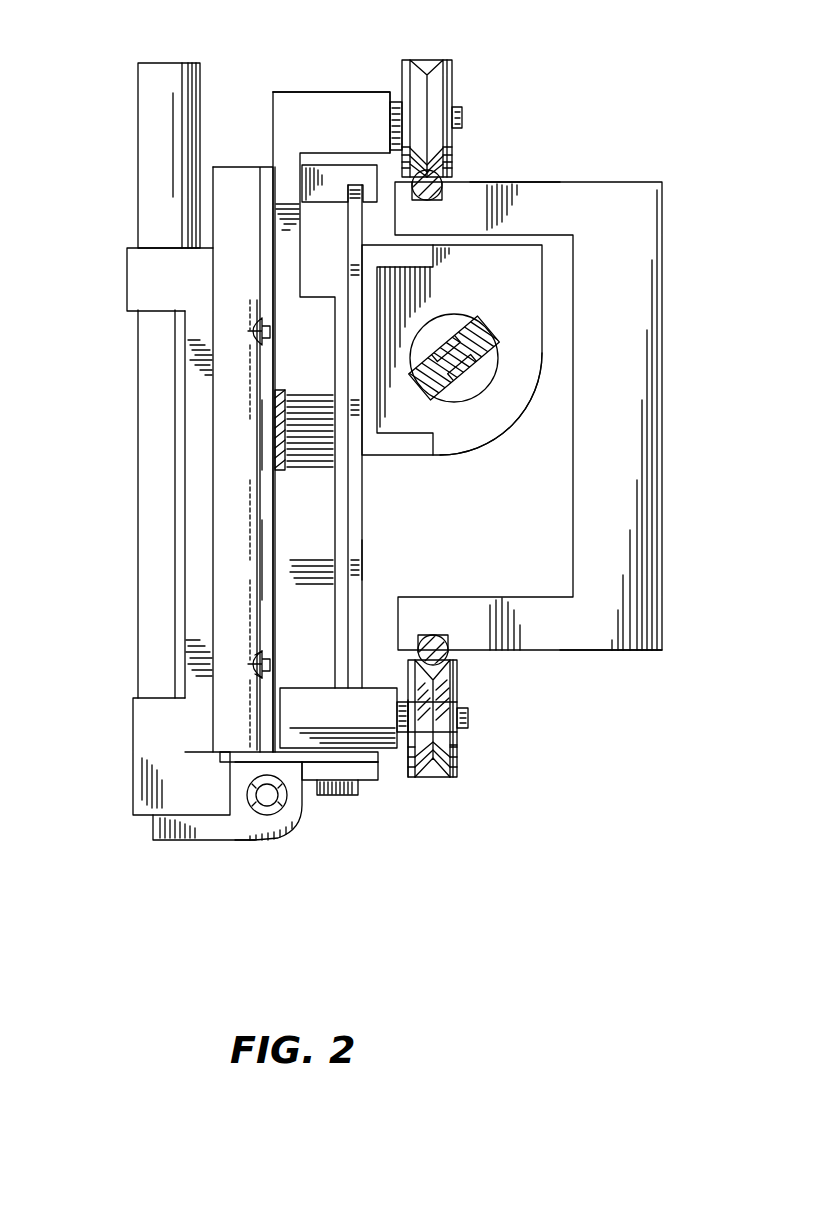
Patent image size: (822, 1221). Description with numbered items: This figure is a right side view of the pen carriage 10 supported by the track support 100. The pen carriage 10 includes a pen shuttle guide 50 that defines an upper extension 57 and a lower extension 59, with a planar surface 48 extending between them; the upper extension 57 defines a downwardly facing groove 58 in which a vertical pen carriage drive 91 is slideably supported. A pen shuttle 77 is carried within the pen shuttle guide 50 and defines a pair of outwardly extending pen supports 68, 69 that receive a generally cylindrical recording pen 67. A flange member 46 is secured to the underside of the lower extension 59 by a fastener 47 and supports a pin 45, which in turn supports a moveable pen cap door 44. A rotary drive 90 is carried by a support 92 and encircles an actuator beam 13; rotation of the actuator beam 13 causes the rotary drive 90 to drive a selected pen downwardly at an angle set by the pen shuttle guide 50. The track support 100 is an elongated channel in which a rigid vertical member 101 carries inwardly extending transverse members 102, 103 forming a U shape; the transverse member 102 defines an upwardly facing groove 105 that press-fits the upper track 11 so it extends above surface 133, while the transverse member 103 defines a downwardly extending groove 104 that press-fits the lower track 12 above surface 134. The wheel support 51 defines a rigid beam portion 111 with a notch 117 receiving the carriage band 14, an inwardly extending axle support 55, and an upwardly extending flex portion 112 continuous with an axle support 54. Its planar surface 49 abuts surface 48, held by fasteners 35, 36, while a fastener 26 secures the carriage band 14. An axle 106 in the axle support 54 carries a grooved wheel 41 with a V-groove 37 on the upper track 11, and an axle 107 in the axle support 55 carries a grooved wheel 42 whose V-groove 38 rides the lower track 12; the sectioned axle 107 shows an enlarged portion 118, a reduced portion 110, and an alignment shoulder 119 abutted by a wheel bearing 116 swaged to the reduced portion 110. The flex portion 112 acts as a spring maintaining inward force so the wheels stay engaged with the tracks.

The pen carriage 10 is at (130, 390).
The upper track 11 is at (445, 180).
The lower track 12 is at (436, 636).
The actuator beam 13 is at (478, 326).
The carriage band 14 is at (292, 527).
The fastener 26 is at (263, 458).
The fastener 35 is at (190, 680).
The fastener 36 is at (247, 328).
The V-groove 37 is at (438, 60).
The V-groove 38 is at (435, 778).
The grooved wheel 41 is at (453, 85).
The grooved wheel 42 is at (458, 750).
The pen cap door 44 is at (155, 830).
The pin 45 is at (265, 805).
The flange member 46 is at (262, 835).
The fastener 47 is at (312, 765).
The planar surface 48 is at (290, 597).
The planar surface 49 is at (218, 814).
The pen shuttle guide 50 is at (233, 168).
The wheel support 51 is at (316, 480).
The axle support 54 is at (368, 102).
The axle support 55 is at (332, 796).
The upper extension 57 is at (330, 173).
The downwardly facing groove 58 is at (345, 202).
The lower extension 59 is at (318, 780).
The recording pen 67 is at (158, 352).
The pen support 68 is at (140, 262).
The pen support 69 is at (140, 740).
The pen shuttle 77 is at (190, 593).
The rotary drive 90 is at (480, 452).
The vertical pen carriage drive 91 is at (363, 558).
The support 92 is at (455, 379).
The track support 100 is at (579, 407).
The rigid vertical member 101 is at (648, 542).
The transverse member 102 is at (552, 203).
The transverse member 103 is at (577, 597).
The groove 104 is at (484, 637).
The groove 105 is at (455, 176).
The axle 106 is at (462, 127).
The axle 107 is at (468, 722).
The reduced portion 110 is at (430, 710).
The beam portion 111 is at (363, 530).
The flex portion 112 is at (285, 190).
The wheel bearing 116 is at (410, 693).
The notch 117 is at (290, 557).
The enlarged portion 118 is at (397, 710).
The alignment shoulder 119 is at (412, 778).
The surface 133 is at (500, 182).
The surface 134 is at (628, 652).